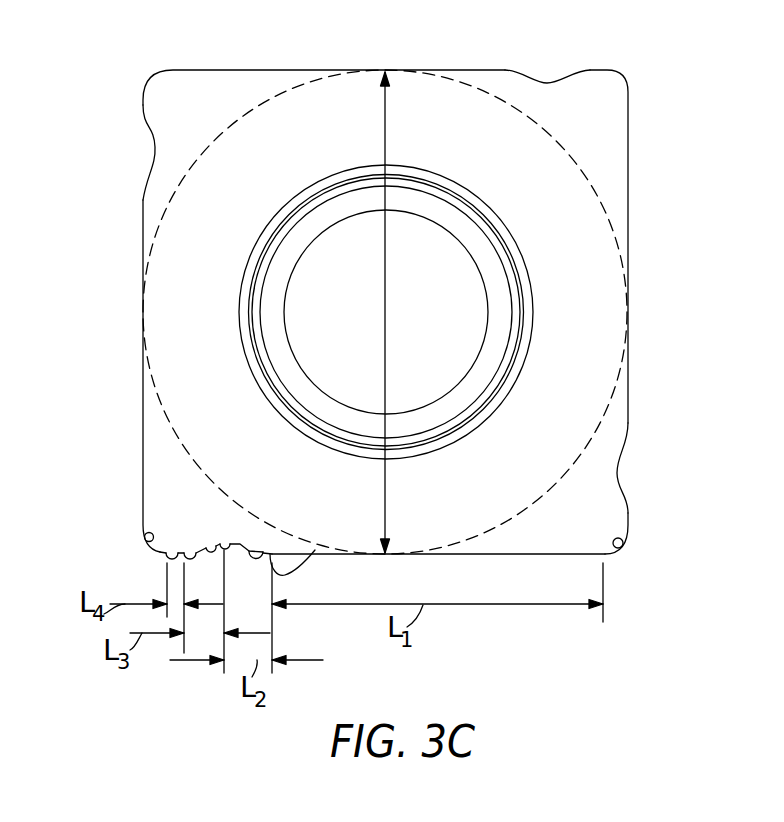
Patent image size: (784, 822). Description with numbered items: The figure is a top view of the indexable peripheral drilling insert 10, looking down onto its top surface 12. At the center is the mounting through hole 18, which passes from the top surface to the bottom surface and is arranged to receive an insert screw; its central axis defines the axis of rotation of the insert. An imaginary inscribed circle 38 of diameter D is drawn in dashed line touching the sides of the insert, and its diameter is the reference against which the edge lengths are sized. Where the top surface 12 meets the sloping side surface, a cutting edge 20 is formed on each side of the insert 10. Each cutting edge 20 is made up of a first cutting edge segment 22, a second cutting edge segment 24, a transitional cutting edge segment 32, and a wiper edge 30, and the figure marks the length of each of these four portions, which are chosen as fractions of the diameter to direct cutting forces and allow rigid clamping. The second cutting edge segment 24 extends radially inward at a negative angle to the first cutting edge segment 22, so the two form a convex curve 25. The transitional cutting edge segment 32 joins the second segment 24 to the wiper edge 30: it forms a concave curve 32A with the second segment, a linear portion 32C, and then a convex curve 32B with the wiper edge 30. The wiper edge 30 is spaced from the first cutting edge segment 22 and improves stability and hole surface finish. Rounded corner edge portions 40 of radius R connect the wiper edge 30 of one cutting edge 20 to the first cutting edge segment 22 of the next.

The indexable peripheral drilling insert 10 is at (98, 85).
The top surface 12 is at (607, 304).
The mounting through hole 18 is at (475, 264).
The cutting edge 20 is at (345, 60).
The first cutting edge segment 22 is at (457, 553).
The second cutting edge segment 24 is at (265, 553).
The convex curve 25 is at (315, 550).
The wiper edge 30 is at (183, 554).
The transitional cutting edge segment 32 is at (225, 545).
The concave curve 32A is at (256, 552).
The convex curve 32B is at (210, 549).
The linear portion 32C is at (201, 560).
The imaginary inscribed circle 38 is at (250, 110).
The corner edge portion 40 is at (152, 540).